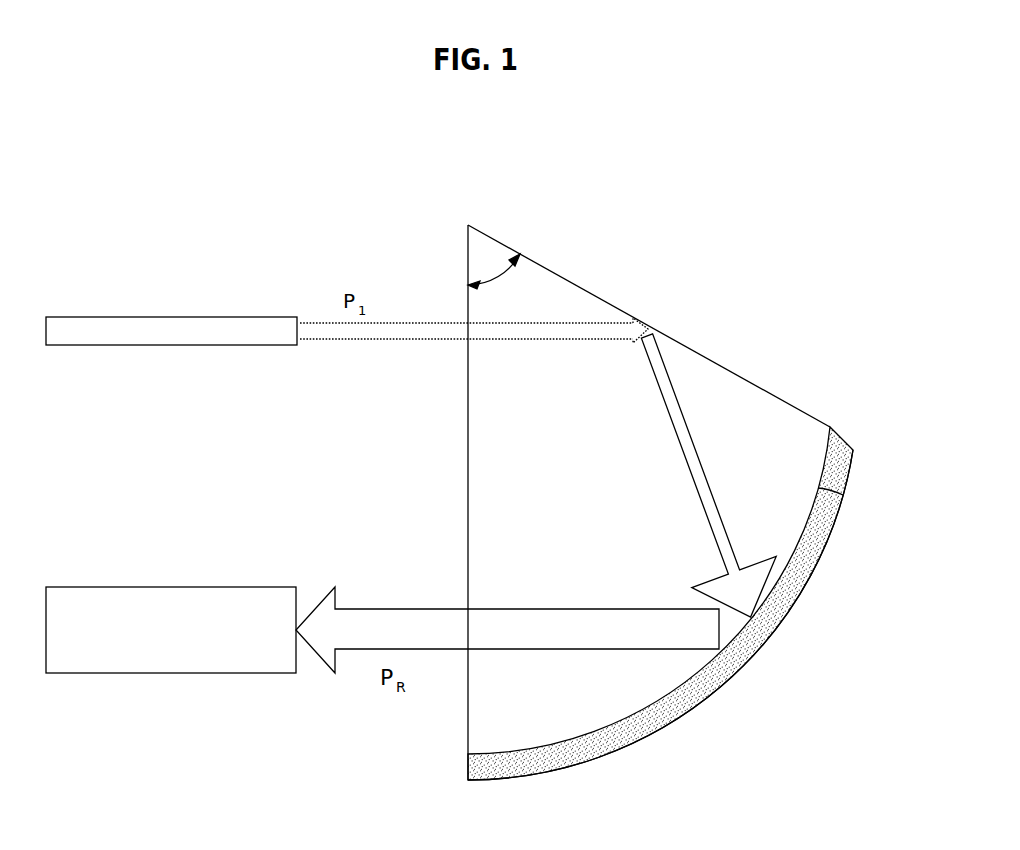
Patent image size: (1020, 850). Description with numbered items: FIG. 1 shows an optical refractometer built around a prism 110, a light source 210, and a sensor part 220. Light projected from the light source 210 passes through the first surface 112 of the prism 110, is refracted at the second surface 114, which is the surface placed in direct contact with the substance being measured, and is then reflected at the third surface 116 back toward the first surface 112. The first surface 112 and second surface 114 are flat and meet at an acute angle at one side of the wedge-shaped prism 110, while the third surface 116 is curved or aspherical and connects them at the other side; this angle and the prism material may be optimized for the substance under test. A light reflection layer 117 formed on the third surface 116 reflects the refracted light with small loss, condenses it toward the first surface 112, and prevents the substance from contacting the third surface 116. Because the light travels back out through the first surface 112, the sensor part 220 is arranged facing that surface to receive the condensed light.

The prism 110 is at (557, 283).
The first surface 112 is at (483, 450).
The second surface 114 is at (755, 393).
The third surface 116 is at (813, 487).
The light reflection layer 117 is at (807, 538).
The light source 210 is at (137, 316).
The sensor part 220 is at (151, 587).